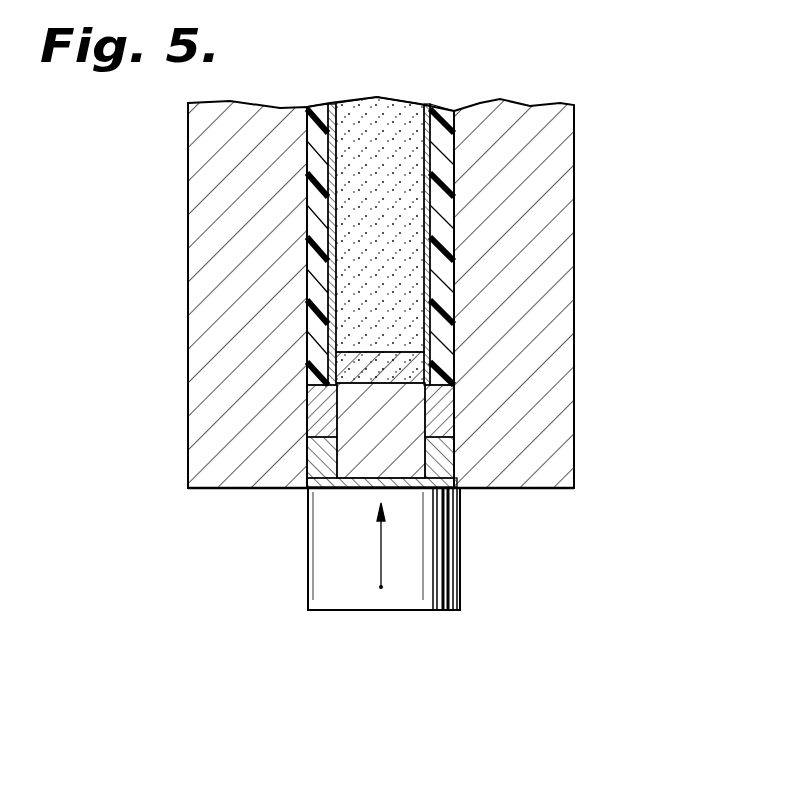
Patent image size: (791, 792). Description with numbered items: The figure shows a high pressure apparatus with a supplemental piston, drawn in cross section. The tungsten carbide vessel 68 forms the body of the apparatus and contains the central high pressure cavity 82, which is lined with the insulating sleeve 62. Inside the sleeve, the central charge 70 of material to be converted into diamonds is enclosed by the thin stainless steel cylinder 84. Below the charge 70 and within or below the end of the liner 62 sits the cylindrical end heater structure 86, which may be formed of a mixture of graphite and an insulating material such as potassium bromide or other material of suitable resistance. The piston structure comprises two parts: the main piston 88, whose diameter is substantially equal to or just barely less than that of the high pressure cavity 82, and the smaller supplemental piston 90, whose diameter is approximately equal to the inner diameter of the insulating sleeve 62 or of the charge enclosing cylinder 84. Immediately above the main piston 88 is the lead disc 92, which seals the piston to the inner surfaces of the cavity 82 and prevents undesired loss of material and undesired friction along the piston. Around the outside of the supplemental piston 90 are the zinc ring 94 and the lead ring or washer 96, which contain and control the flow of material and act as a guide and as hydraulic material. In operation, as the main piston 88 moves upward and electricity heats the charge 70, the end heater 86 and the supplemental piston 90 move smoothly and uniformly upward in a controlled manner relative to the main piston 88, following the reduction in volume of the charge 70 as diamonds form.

The insulating sleeve 62 is at (443, 180).
The tungsten carbide vessel 68 is at (537, 286).
The central charge 70 is at (397, 130).
The central high pressure cavity 82 is at (335, 130).
The thin stainless steel cylinder 84 is at (334, 206).
The cylindrical end heater structure 86 is at (330, 373).
The main piston 88 is at (352, 602).
The supplemental piston 90 is at (387, 415).
The lead disc 92 is at (413, 482).
The zinc ring 94 is at (323, 416).
The lead ring or washer 96 is at (323, 453).